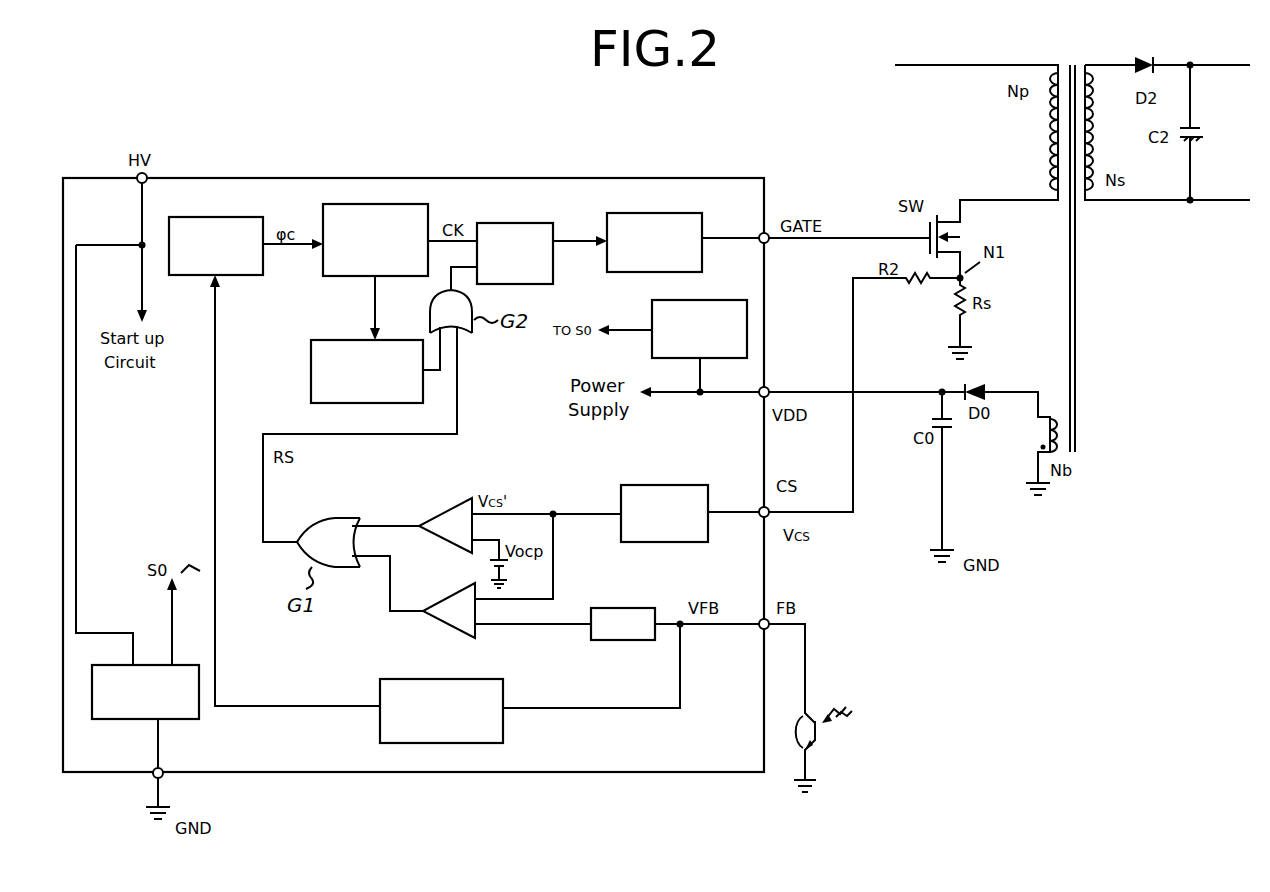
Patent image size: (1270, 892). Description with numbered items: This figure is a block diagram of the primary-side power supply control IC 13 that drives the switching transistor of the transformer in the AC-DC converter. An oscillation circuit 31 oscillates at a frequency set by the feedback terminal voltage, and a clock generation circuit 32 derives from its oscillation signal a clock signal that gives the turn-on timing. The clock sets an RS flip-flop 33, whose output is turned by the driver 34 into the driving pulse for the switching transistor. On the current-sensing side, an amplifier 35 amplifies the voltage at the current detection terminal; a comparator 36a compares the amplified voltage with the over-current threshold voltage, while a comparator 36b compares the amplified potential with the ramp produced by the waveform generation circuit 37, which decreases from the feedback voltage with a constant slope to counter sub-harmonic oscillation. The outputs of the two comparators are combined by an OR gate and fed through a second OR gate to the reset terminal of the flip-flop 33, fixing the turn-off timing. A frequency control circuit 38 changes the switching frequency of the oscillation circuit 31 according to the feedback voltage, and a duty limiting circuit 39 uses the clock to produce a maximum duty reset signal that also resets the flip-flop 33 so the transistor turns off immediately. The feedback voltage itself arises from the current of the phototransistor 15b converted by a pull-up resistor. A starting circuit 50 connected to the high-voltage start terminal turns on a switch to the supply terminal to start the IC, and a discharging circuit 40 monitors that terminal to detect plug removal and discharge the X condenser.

The power supply control IC 13 is at (326, 178).
The oscillation circuit 31 is at (258, 218).
The clock generation circuit 32 is at (346, 278).
The RS flip-flop 33 is at (545, 222).
The driver 34 is at (645, 272).
The amplifier 35 is at (660, 486).
The comparator 36a is at (445, 511).
The comparator 36b is at (451, 590).
The waveform generation circuit 37 is at (612, 608).
The frequency control circuit 38 is at (380, 740).
The duty limiting circuit 39 is at (311, 376).
The discharging circuit 40 is at (115, 720).
The starting circuit 50 is at (713, 300).
The phototransistor 15b is at (784, 745).